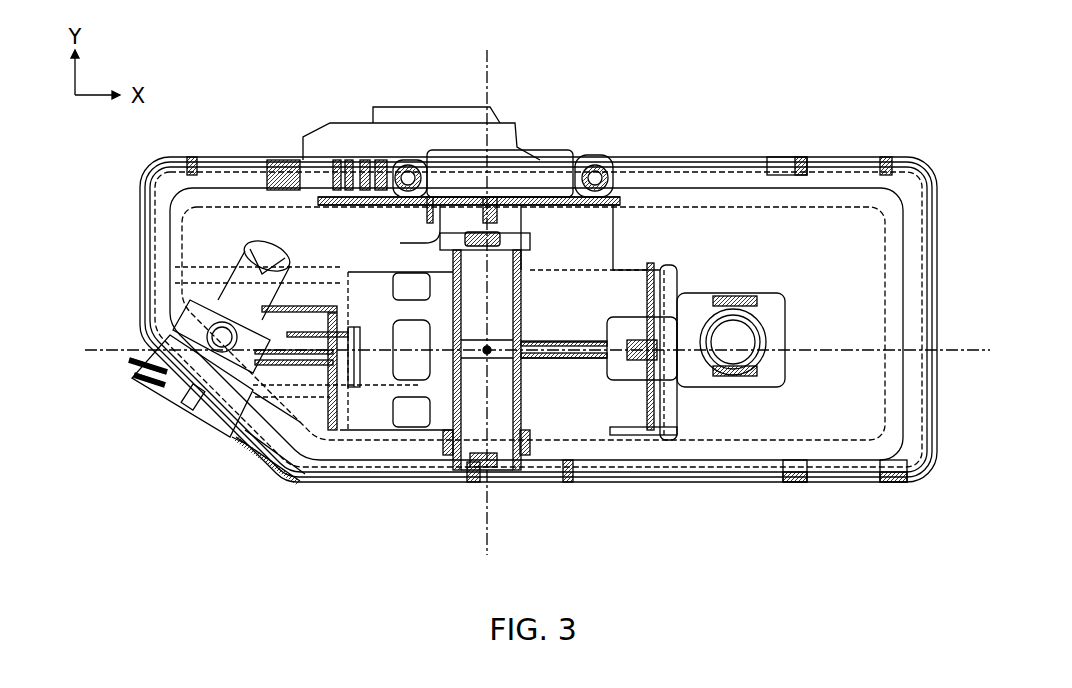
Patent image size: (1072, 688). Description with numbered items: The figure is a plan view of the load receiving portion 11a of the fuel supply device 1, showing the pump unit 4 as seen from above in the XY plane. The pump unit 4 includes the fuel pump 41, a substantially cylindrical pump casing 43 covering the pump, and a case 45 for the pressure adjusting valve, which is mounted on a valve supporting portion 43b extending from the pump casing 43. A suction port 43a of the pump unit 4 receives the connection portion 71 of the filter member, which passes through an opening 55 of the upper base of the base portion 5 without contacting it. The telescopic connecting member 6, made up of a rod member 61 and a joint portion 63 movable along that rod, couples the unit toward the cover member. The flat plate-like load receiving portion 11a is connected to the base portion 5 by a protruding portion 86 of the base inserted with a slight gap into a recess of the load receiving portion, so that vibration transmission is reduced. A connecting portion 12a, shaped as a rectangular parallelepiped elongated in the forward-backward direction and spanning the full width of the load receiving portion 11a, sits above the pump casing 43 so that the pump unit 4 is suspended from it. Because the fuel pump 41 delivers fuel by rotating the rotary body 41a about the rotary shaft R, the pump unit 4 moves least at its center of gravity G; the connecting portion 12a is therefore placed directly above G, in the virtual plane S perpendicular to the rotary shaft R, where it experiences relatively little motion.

The pump device 1 is at (240, 487).
The pump unit 4 is at (683, 409).
The base portion 5 is at (918, 488).
The connecting member 6 is at (352, 124).
The rod member 61 is at (404, 164).
The joint portion 63 is at (547, 170).
The protruding portion 86 is at (488, 228).
The load receiving portion 11a is at (505, 392).
The connecting portion 12a is at (522, 363).
The pump casing 43 is at (588, 394).
The suction port 43a is at (688, 330).
The valve supporting portion 43b is at (287, 327).
The fuel pump 41 is at (392, 487).
The rotary body 41a is at (338, 487).
The case for the pressure adjusting valve 45 is at (218, 408).
The opening 55 is at (783, 307).
The connection portion 71 is at (733, 300).
The center of gravity G is at (484, 357).
The virtual plane S is at (486, 303).
The rotary shaft R is at (537, 352).